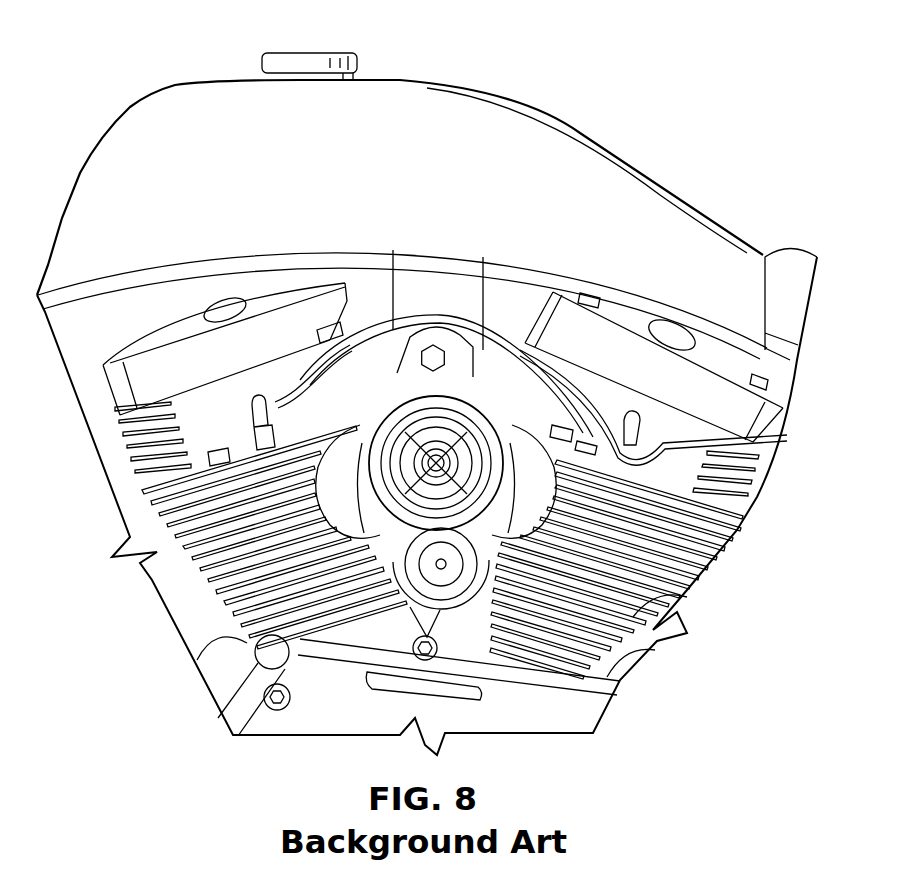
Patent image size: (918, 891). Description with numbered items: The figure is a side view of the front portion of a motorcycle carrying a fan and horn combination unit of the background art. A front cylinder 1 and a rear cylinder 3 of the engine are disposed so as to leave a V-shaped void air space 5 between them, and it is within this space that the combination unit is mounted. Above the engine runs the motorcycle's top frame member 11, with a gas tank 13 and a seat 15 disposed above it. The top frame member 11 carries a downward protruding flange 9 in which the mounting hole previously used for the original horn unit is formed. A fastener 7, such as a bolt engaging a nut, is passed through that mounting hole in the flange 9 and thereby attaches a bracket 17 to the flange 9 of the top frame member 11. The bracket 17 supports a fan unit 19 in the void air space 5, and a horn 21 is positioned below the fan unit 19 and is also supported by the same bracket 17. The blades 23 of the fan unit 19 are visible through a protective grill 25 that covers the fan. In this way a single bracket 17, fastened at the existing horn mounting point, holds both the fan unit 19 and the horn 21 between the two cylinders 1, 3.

The front cylinder 1 is at (173, 357).
The rear cylinder 3 is at (617, 347).
The V-shaped void air space 5 is at (507, 326).
The fastener 7 is at (457, 345).
The downward protruding flange 9 is at (440, 283).
The top frame member 11 is at (92, 290).
The gas tank 13 is at (660, 202).
The seat 15 is at (790, 255).
The bracket 17 is at (413, 340).
The fan unit 19 is at (344, 409).
The horn 21 is at (465, 580).
The blades 23 is at (440, 430).
The protective grill 25 is at (403, 493).